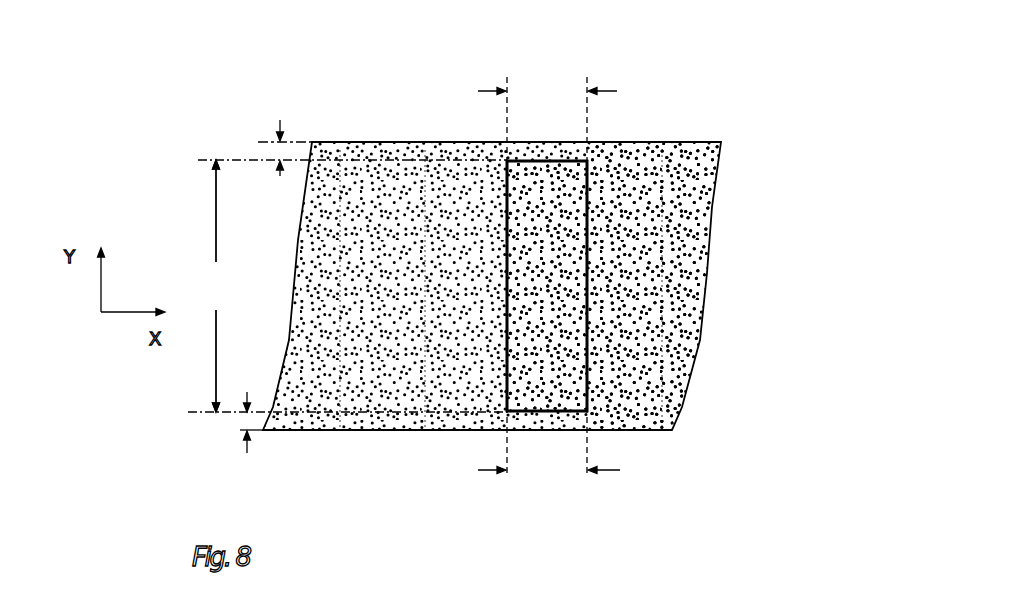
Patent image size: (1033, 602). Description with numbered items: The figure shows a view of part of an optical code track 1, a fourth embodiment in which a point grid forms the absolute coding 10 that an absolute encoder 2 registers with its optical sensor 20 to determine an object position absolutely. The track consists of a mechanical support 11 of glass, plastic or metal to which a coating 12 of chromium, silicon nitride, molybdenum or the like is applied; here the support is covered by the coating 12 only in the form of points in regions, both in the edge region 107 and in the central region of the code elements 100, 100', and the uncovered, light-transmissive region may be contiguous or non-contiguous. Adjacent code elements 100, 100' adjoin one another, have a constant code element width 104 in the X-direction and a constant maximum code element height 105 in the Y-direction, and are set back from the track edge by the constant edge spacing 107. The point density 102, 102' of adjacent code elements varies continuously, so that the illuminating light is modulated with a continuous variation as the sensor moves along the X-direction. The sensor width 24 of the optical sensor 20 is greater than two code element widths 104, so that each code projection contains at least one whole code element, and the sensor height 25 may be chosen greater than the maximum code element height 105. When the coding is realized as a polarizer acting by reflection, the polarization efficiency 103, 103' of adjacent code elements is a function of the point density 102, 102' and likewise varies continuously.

The optical code track 1 is at (754, 93).
The absolute encoder 2 is at (563, 413).
The optical sensor 20 is at (547, 286).
The absolute coding 10 is at (353, 190).
The mechanical support 11 is at (302, 433).
The coating 12 is at (380, 428).
The sensor width 24 is at (549, 470).
The sensor height 25 is at (337, 286).
The code element 100 is at (476, 275).
The code element 100' is at (627, 275).
The point density 102 is at (653, 315).
The polarization efficiency 103 is at (547, 286).
The point density 102' is at (719, 288).
The polarization efficiency 103' is at (654, 286).
The code element width 104 is at (547, 91).
The maximum code element height 105 is at (216, 286).
The edge region / edge spacing 107 is at (275, 149).